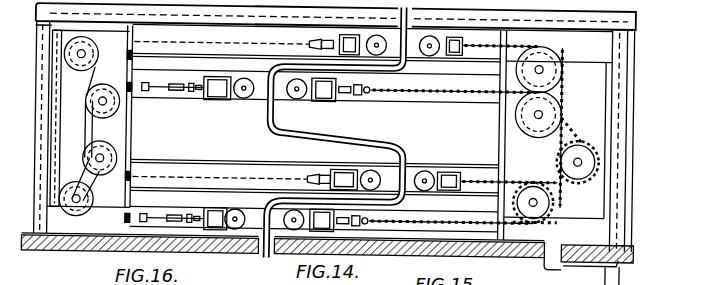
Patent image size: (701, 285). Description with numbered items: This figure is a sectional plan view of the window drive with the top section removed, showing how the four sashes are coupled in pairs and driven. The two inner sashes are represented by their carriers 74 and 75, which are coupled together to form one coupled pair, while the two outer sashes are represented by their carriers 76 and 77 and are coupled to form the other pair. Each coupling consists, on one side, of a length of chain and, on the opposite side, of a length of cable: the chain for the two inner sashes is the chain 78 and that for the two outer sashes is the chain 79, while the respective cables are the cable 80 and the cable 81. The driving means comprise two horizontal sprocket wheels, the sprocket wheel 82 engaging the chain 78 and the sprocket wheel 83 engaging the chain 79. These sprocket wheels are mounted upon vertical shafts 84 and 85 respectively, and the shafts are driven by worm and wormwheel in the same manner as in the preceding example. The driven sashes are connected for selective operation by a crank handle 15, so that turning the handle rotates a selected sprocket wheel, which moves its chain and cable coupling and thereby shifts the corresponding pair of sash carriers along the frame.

The crank handle 15 is at (588, 262).
The carrier 74 is at (246, 96).
The carrier 75 is at (437, 165).
The carrier 76 is at (450, 48).
The carrier 77 is at (250, 228).
The chain 78 is at (570, 114).
The chain 79 is at (563, 72).
The cable 80 is at (88, 128).
The cable 81 is at (62, 133).
The sprocket wheel 82 is at (588, 154).
The sprocket wheel 83 is at (545, 193).
The vertical shaft 84 is at (559, 151).
The vertical shaft 85 is at (538, 198).